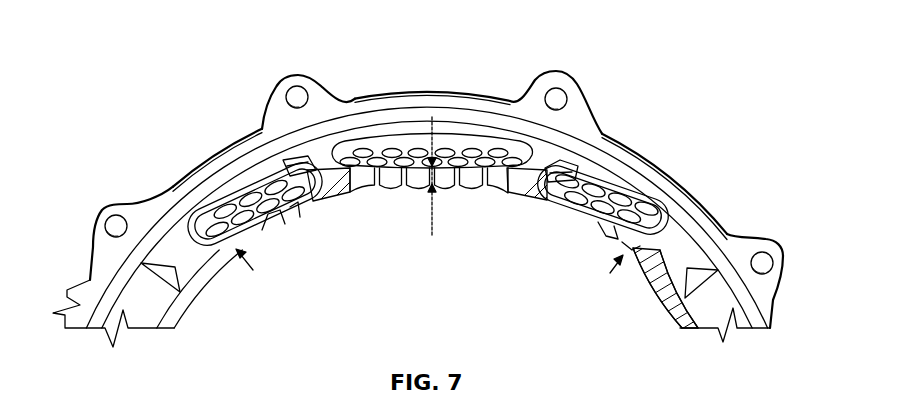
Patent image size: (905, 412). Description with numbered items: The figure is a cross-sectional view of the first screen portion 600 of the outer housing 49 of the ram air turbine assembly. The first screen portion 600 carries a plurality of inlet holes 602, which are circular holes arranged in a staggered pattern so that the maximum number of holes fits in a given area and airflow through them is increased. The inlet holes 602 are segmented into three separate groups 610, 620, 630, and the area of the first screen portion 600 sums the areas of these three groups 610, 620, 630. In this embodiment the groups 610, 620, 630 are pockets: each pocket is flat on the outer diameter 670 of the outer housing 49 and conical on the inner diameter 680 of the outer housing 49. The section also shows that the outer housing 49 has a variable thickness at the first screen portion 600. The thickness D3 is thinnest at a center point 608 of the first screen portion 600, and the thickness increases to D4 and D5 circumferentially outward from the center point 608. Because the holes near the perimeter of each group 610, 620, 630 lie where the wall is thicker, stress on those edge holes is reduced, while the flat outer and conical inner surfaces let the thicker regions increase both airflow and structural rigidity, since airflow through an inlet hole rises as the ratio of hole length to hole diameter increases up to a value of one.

The first screen portion 600 is at (178, 32).
The first group of inlet holes 610 is at (268, 182).
The second group of inlet holes 620 is at (462, 137).
The third group of inlet holes 630 is at (584, 178).
The outer diameter 670 is at (358, 150).
The inner diameter 680 is at (406, 181).
The center point 608 is at (428, 184).
The inlet holes 602 is at (633, 237).
The outer housing 49 is at (667, 280).
The thickness at center point D3 is at (437, 221).
The thickness circumferentially outward D4 is at (253, 270).
The thickness circumferentially outward D5 is at (617, 261).